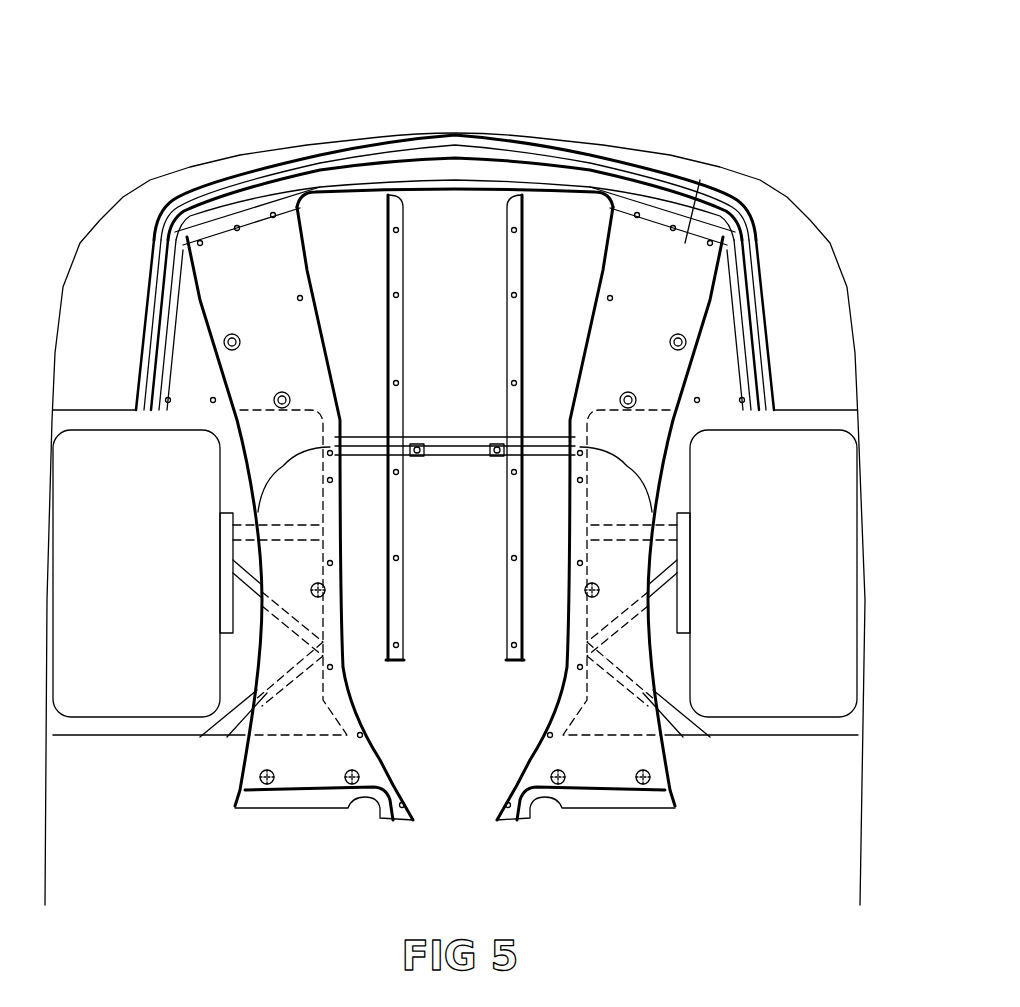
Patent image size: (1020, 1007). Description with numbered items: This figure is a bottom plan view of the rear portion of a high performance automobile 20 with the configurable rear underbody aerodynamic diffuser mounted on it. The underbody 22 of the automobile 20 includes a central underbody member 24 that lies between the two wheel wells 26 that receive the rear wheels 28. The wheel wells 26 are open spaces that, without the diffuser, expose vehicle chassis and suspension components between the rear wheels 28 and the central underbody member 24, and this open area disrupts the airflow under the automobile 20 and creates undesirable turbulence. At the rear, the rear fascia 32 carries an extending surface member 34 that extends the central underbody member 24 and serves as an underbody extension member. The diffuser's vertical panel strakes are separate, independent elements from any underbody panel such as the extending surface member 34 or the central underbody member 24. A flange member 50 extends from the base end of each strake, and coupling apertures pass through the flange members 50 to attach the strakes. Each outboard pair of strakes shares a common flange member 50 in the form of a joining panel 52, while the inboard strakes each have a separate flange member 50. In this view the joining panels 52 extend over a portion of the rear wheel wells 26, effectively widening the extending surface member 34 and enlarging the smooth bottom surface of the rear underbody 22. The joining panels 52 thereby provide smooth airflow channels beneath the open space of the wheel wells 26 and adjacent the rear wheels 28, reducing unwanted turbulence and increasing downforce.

The high performance automobile 20 is at (198, 86).
The underbody 22 is at (458, 772).
The central underbody member 24 is at (455, 531).
The wheel wells 26 is at (680, 455).
The rear wheels 28 is at (455, 573).
The rear fascia 32 is at (700, 180).
The extending surface member 34 is at (455, 250).
The flange member 50 is at (253, 237).
The joining panel 52 is at (455, 534).